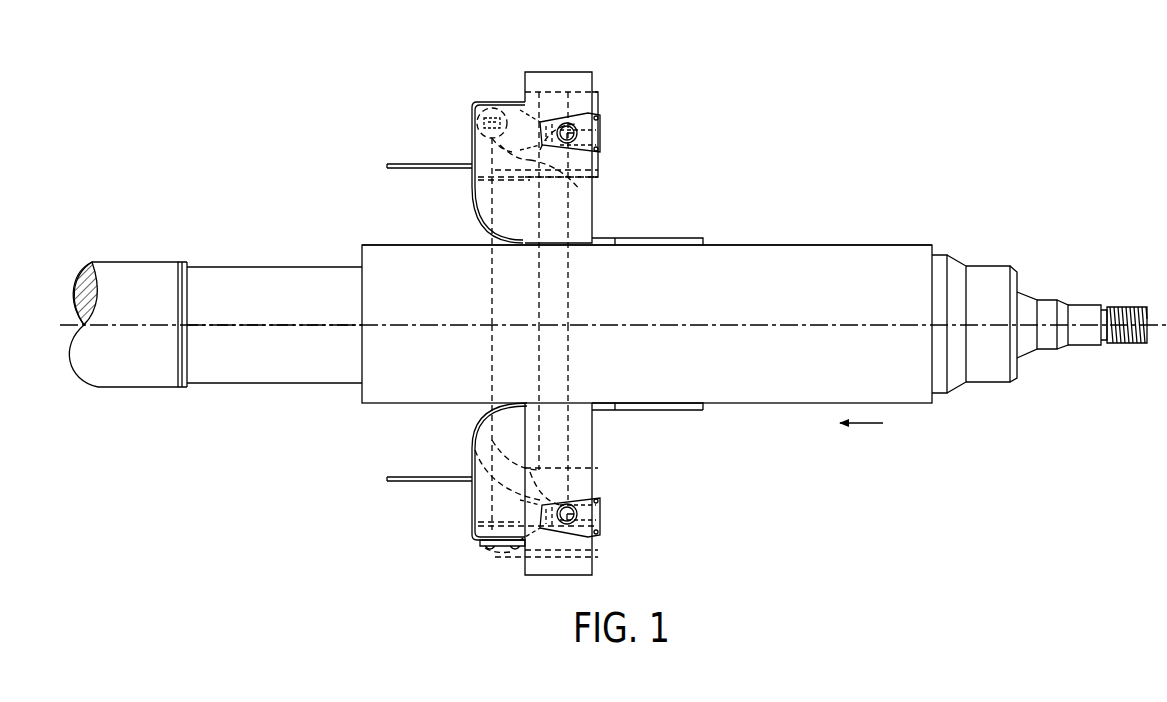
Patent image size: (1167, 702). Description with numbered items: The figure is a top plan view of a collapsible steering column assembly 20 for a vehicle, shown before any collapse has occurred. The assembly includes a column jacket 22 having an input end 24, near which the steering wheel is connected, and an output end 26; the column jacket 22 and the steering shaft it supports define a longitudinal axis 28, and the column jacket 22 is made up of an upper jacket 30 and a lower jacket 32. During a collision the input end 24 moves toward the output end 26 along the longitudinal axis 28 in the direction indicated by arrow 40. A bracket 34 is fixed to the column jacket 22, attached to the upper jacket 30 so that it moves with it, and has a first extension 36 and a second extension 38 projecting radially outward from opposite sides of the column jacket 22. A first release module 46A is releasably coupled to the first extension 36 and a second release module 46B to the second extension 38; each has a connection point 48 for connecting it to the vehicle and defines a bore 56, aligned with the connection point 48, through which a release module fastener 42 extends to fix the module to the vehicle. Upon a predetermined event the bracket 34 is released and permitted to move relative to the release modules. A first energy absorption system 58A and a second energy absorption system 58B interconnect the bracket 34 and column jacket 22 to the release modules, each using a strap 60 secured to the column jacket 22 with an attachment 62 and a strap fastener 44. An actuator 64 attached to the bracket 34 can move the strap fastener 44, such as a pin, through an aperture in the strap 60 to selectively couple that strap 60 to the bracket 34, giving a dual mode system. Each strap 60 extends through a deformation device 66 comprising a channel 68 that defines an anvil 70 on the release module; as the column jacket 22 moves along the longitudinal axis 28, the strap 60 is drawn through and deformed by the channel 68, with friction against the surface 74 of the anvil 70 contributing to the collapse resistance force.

The steering column assembly 20 is at (760, 70).
The column jacket 22 is at (777, 241).
The input end 24 is at (936, 248).
The output end 26 is at (95, 265).
The longitudinal axis 28 is at (200, 325).
The upper jacket 30 is at (851, 244).
The lower jacket 32 is at (260, 267).
The bracket 34 is at (593, 223).
The first extension 36 is at (470, 190).
The second extension 38 is at (470, 468).
The arrow 40 is at (861, 424).
The release module fastener 42 is at (574, 124).
The strap fastener 44 is at (478, 112).
The first release module 46A is at (600, 135).
The second release module 46B is at (600, 511).
The connection point 48 is at (598, 118).
The bore 56 is at (556, 128).
The first energy absorption system 58A is at (529, 127).
The second energy absorption system 58B is at (509, 519).
The strap 60 is at (400, 164).
The attachment 62 is at (472, 136).
The actuator 64 is at (480, 110).
The deformation device 66 is at (540, 163).
The channel 68 is at (531, 164).
The anvil 70 is at (478, 180).
The surface of the anvil 74 is at (598, 181).